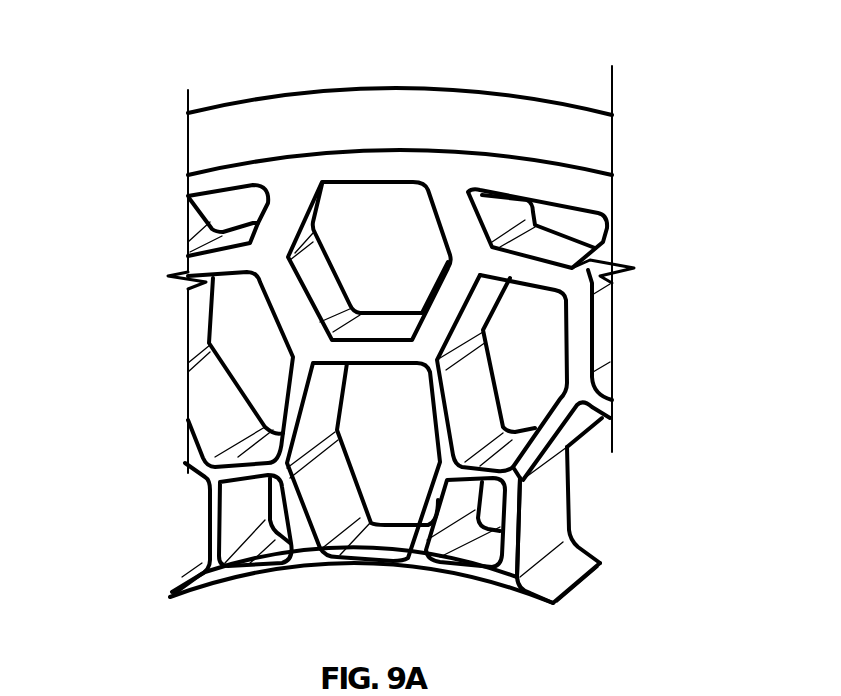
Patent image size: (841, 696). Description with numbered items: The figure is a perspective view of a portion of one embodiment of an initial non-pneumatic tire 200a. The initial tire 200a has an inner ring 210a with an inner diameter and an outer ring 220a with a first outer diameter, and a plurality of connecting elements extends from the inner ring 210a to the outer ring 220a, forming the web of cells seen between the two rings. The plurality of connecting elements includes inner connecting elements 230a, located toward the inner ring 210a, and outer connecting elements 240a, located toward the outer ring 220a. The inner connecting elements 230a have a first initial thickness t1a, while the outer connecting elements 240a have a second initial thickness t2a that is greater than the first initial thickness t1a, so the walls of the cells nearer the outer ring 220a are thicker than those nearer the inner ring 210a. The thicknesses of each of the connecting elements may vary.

The initial tire 200a is at (136, 37).
The outer ring 220a is at (476, 125).
The outer connecting elements 240a is at (580, 337).
The inner connecting elements 230a is at (572, 492).
The inner ring 210a is at (560, 578).
The second initial thickness t2a is at (305, 295).
The first initial thickness t1a is at (431, 420).